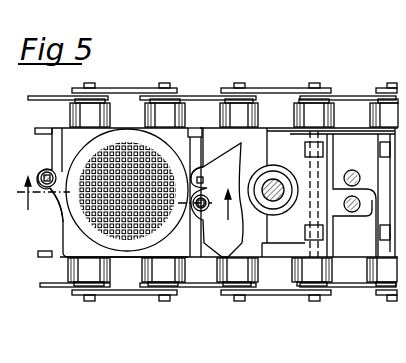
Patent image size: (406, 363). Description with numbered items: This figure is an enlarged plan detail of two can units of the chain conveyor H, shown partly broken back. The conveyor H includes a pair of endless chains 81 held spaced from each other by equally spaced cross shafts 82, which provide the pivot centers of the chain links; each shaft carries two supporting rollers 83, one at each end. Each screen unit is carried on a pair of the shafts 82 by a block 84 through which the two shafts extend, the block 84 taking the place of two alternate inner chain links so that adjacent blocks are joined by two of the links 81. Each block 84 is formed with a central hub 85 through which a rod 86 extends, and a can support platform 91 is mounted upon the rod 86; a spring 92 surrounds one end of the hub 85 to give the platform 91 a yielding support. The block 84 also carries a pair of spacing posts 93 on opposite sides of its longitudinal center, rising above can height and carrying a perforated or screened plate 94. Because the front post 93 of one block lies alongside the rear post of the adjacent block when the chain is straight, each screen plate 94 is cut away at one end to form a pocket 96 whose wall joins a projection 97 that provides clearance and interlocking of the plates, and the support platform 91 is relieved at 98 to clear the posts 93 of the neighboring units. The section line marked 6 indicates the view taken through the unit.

The chain conveyor H is at (340, 86).
The endless chains 81 is at (194, 96).
The cross shafts 82 is at (316, 87).
The supporting rollers 83 is at (148, 112).
The block 84 is at (380, 214).
The central hub 85 is at (283, 181).
The rod 86 is at (274, 182).
The can support platform 91 is at (196, 250).
The spring 92 is at (269, 214).
The spacing posts 93 is at (46, 172).
The perforated or screened plate 94 is at (87, 152).
The pocket 96 is at (198, 176).
The projection 97 is at (200, 164).
The relief 98 is at (59, 204).
The section line 6- 6 is at (127, 203).